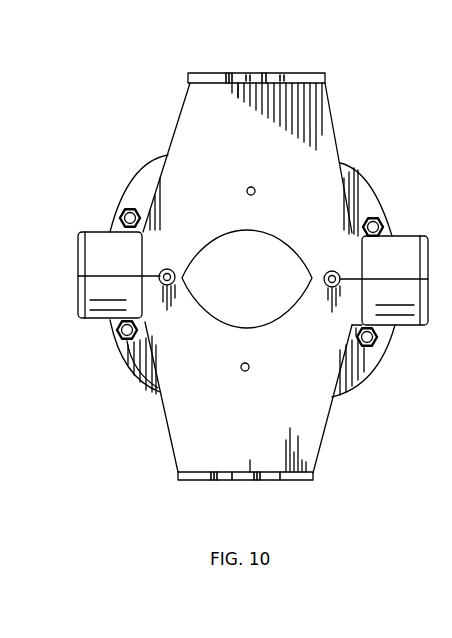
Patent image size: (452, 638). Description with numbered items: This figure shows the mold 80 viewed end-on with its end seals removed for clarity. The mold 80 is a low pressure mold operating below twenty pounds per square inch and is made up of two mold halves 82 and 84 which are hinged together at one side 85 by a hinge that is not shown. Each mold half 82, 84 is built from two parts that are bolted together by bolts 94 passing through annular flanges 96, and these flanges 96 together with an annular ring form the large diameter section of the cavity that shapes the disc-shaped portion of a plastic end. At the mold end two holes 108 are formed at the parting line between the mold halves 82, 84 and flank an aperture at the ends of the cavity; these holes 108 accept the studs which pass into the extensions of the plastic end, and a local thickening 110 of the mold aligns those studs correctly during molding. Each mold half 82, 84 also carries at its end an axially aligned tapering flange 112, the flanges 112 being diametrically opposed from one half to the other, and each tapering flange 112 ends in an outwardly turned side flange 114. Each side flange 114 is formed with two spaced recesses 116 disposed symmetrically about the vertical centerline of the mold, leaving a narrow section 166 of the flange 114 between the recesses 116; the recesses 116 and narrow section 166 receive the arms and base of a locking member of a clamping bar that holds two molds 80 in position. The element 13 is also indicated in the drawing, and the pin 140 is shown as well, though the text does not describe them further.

The arm block 13 is at (396, 284).
The mold 80 is at (138, 168).
The mold half 82 is at (174, 140).
The mold half 84 is at (152, 400).
The side 85 is at (80, 278).
The bolts 94 is at (120, 213).
The annular flanges 96 is at (132, 374).
The holes 108 is at (170, 268).
The local thickening 110 is at (178, 290).
The tapering flanges 112 is at (332, 130).
The side flanges 114 is at (188, 78).
The recesses 116 is at (268, 75).
The locating pin 140 is at (256, 192).
The narrow section 166 is at (244, 86).